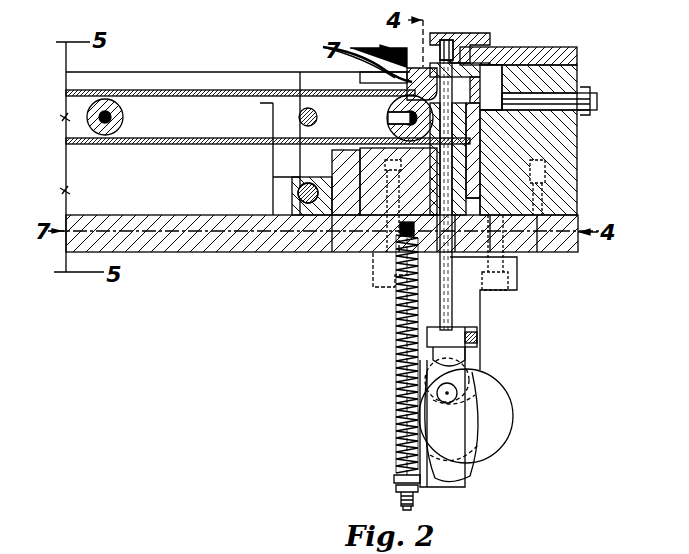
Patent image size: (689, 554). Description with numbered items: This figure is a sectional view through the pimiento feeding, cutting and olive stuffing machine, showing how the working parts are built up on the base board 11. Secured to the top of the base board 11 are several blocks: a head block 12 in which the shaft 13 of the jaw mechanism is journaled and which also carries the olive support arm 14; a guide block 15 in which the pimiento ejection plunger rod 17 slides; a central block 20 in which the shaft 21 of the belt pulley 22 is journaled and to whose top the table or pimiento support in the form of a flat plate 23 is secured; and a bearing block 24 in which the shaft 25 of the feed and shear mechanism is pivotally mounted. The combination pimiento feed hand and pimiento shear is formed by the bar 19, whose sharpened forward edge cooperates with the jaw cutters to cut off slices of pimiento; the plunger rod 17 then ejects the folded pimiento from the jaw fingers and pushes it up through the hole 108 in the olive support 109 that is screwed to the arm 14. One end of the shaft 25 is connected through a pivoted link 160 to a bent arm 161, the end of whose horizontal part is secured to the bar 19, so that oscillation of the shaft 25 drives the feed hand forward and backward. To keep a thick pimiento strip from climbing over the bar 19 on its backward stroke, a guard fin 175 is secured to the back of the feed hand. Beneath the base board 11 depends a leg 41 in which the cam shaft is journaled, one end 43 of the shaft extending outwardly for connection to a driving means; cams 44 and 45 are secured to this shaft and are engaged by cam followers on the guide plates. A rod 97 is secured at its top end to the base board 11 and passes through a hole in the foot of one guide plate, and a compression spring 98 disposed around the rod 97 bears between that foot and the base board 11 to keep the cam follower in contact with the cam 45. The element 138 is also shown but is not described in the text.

The base board 11 is at (580, 250).
The head block 12 is at (577, 153).
The shaft 13 is at (593, 107).
The olive support arm 14 is at (573, 45).
The guide block 15 is at (470, 176).
The pimiento ejection plunger rod 17 is at (455, 265).
The bar 19 is at (412, 68).
The central block 20 is at (356, 235).
The shaft 21 is at (400, 132).
The belt pulley 22 is at (388, 113).
The flat plate 23 is at (517, 45).
The bearing block 24 is at (308, 204).
The shaft 25 is at (300, 206).
The leg 41 is at (480, 302).
The end of cam shaft 43 is at (458, 394).
The cam 44 is at (508, 418).
The cam 45 is at (480, 442).
The rod 97 is at (400, 368).
The compression spring 98 is at (403, 343).
The hole 108 is at (470, 43).
The olive support 109 is at (467, 37).
The guide rod 138 is at (110, 92).
The pivoted link 160 is at (296, 160).
The bent arm 161 is at (303, 72).
The guard fin 175 is at (323, 47).